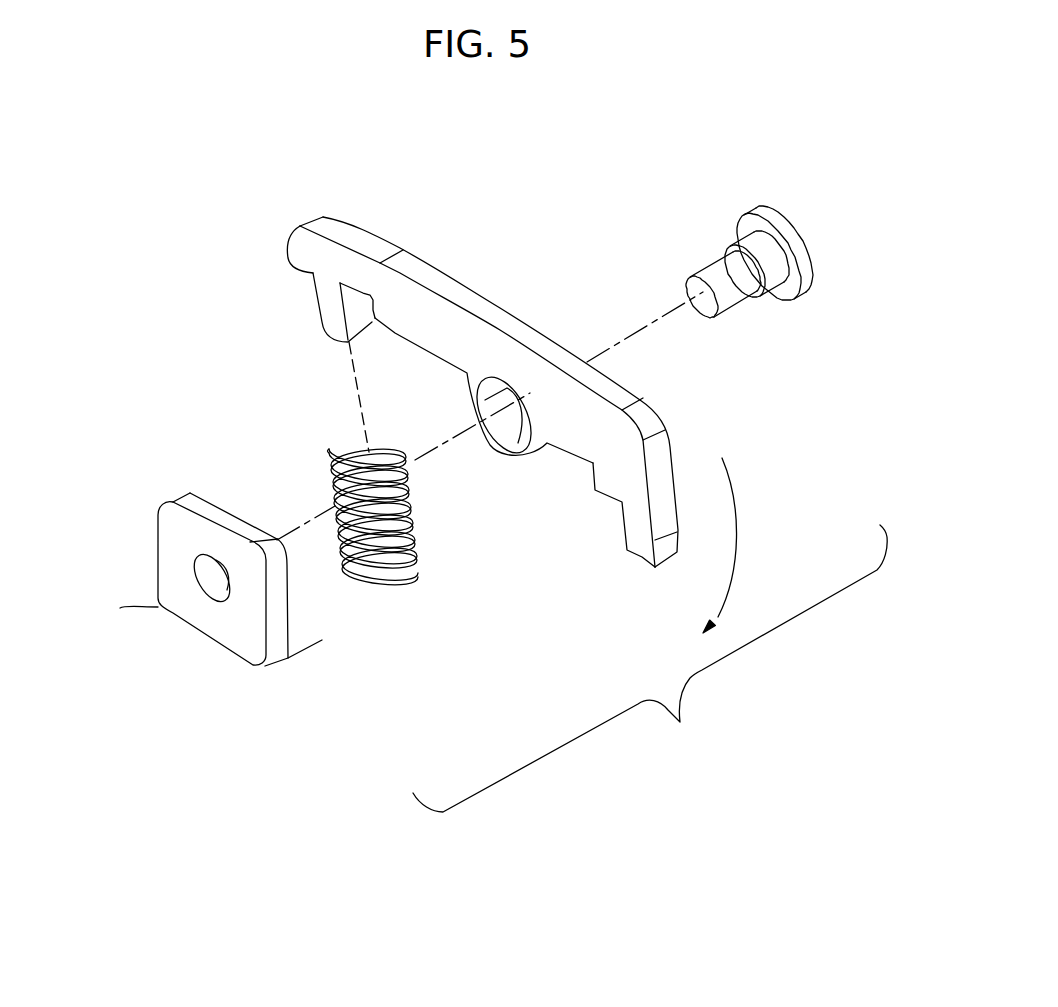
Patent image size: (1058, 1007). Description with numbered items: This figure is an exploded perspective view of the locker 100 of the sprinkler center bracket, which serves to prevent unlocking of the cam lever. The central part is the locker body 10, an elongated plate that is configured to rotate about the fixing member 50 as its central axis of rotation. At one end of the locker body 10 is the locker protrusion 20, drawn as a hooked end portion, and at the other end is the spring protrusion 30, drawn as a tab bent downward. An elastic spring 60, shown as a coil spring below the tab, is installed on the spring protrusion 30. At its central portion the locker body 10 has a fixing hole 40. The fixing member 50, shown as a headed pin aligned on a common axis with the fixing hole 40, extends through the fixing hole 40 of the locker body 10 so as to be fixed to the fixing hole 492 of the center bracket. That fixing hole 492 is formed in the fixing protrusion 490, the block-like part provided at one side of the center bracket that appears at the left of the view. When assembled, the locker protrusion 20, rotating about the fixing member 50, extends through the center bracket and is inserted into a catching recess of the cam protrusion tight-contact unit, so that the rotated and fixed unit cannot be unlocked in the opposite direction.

The locker body 10 is at (536, 296).
The locker protrusion 20 is at (640, 563).
The spring protrusion 30 is at (330, 322).
The fixing hole 40 is at (507, 388).
The fixing member 50 is at (787, 243).
The elastic spring 60 is at (383, 576).
The locker 100 is at (650, 635).
The fixing protrusion 490 is at (170, 558).
The fixing hole 492 is at (217, 588).